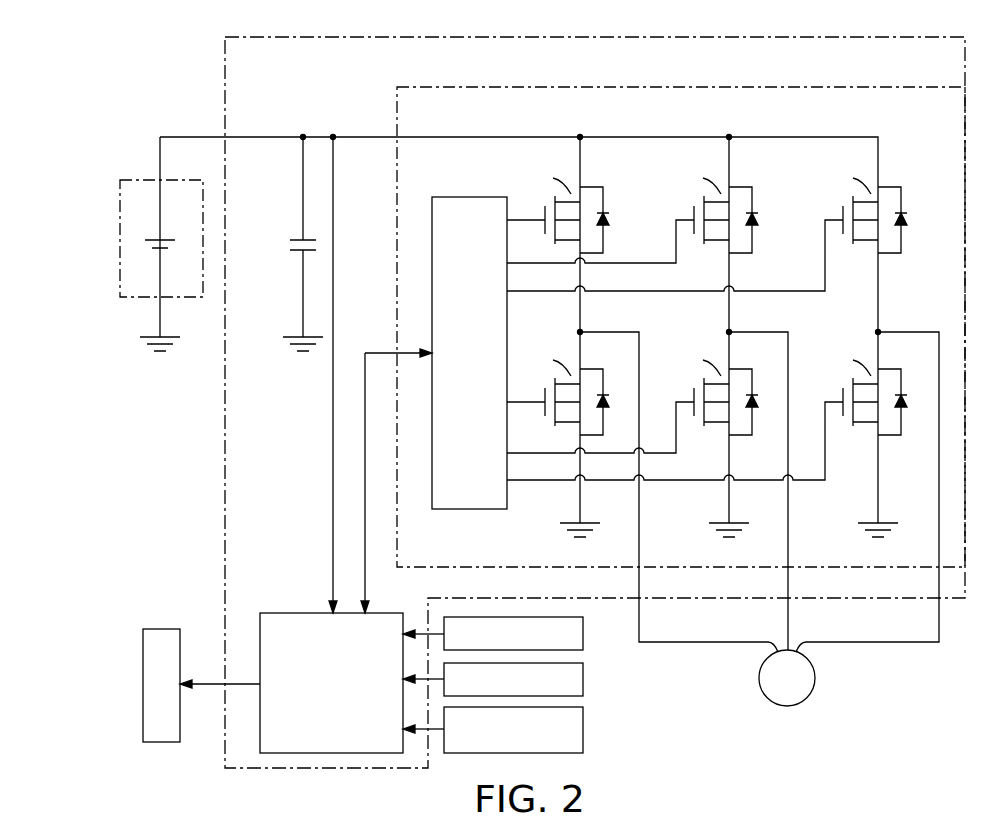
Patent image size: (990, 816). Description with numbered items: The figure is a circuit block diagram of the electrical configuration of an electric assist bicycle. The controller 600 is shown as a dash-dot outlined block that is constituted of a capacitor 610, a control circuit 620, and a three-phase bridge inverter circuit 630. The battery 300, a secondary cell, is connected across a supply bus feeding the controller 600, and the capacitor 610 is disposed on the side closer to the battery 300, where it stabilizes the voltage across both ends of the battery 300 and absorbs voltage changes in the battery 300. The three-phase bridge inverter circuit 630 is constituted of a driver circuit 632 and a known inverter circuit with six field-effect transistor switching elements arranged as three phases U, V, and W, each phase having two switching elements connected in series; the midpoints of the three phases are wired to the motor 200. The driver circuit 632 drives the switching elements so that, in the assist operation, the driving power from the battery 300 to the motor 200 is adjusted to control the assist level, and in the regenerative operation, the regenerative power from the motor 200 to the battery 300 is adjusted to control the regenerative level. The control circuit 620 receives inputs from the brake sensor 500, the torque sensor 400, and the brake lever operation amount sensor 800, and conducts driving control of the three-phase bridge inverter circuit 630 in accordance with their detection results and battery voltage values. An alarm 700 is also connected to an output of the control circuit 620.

The controller 600 is at (224, 60).
The three-phase bridge inverter circuit 630 is at (396, 108).
The driver circuit 632 is at (463, 196).
The capacitor 610 is at (300, 240).
The battery 300 is at (120, 267).
The control circuit 620 is at (300, 612).
The alarm 700 is at (143, 685).
The brake sensor 500 is at (583, 645).
The torque sensor 400 is at (584, 688).
The brake lever operation amount sensor 800 is at (584, 727).
The motor 200 is at (788, 706).